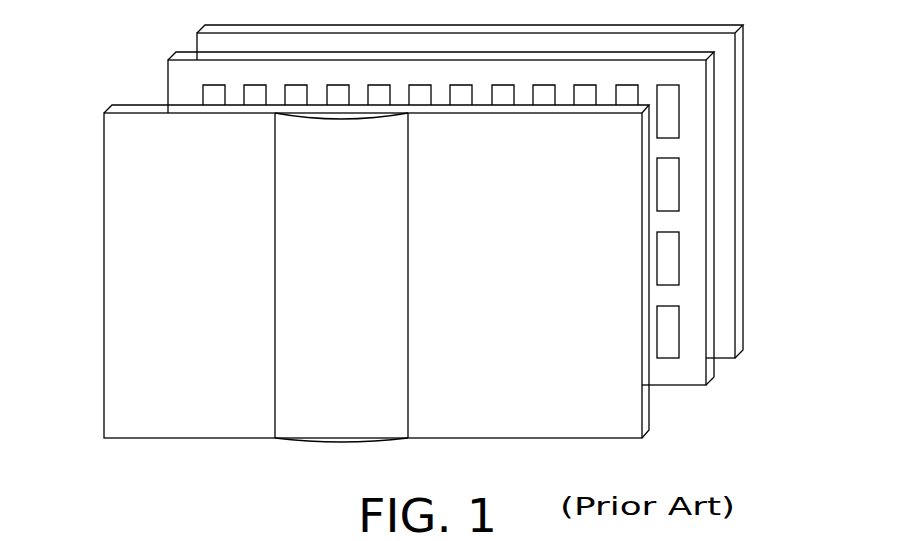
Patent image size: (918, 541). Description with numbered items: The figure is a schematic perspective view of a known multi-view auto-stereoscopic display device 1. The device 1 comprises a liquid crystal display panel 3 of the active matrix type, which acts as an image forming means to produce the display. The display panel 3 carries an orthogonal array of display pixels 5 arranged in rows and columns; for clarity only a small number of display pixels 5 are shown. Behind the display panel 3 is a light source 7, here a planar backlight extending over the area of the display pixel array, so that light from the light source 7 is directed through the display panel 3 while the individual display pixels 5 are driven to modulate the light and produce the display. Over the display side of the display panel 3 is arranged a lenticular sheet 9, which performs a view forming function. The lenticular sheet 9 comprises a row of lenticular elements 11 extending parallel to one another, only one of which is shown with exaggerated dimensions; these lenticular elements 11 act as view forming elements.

The multi-view auto-stereoscopic display device 1 is at (112, 55).
The liquid crystal display panel 3 is at (714, 378).
The display pixels 5 is at (668, 103).
The light source 7 is at (743, 343).
The lenticular sheet 9 is at (649, 430).
The lenticular elements 11 is at (316, 430).